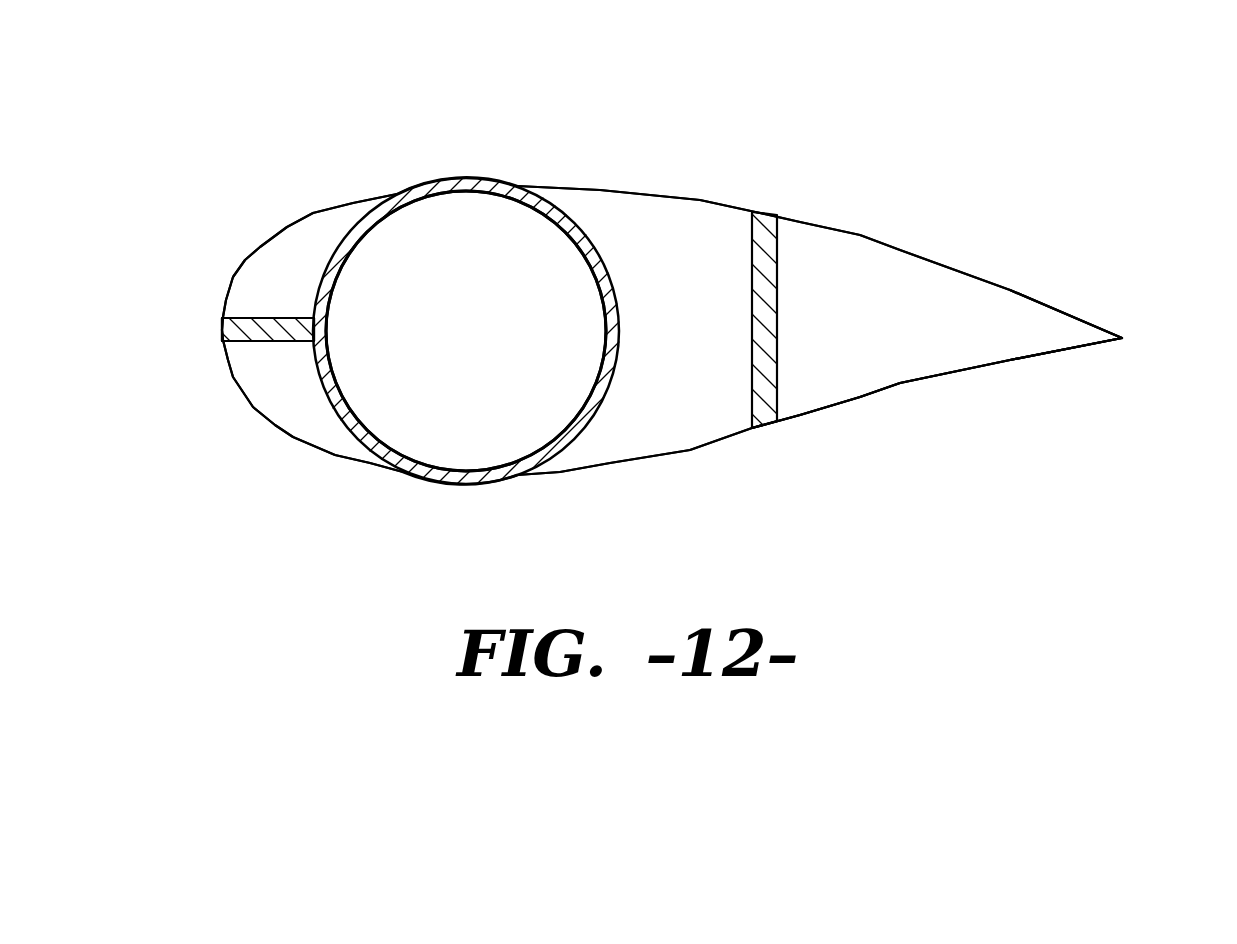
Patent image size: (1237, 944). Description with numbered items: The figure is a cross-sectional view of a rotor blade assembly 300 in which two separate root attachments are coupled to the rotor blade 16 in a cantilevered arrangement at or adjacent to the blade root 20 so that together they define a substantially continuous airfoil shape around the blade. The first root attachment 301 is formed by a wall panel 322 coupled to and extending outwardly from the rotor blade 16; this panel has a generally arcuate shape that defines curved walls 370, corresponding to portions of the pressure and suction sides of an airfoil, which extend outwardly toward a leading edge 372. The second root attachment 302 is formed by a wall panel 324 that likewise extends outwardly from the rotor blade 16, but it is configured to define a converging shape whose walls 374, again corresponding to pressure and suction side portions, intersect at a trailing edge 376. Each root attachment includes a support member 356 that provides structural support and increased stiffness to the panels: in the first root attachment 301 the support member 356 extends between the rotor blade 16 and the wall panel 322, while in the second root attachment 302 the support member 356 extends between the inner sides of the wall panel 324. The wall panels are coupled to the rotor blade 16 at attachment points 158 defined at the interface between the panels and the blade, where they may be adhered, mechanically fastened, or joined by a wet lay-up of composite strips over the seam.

The rotor blade assembly 300 is at (897, 80).
The first root attachment 301 is at (243, 235).
The second root attachment 302 is at (922, 237).
The rotor blade 16 is at (445, 340).
The blade root 20 is at (610, 338).
The attachment points 158 is at (400, 188).
The wall panel 322 is at (342, 202).
The wall panel 324 is at (943, 373).
The support member 356 is at (255, 343).
The curved walls 370 is at (313, 215).
The leading edge 372 is at (222, 330).
The walls 374 is at (660, 195).
The trailing edge 376 is at (1127, 338).